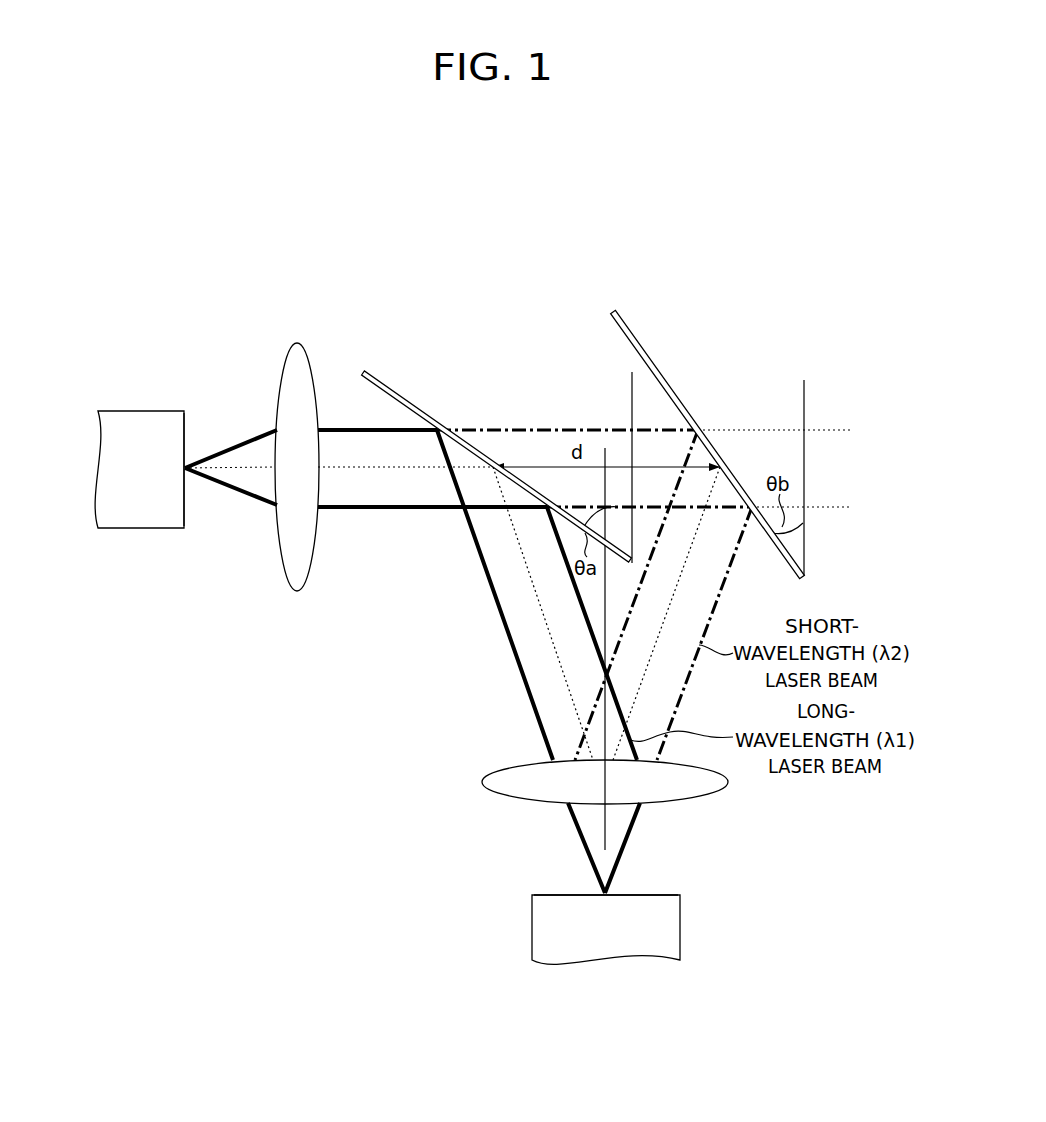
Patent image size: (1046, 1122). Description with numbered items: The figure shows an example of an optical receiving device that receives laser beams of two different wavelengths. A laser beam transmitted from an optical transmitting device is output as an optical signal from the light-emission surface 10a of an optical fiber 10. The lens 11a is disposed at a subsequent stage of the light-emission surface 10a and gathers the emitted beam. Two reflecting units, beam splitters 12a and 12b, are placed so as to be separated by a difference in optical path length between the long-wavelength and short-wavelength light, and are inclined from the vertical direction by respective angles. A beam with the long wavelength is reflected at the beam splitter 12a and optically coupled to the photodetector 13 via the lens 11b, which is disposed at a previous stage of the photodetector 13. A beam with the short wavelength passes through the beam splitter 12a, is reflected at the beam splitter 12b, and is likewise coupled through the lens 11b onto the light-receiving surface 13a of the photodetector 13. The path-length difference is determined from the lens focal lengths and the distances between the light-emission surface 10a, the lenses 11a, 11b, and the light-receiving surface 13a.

The optical fiber 10 is at (138, 425).
The light-emission surface 10a is at (187, 428).
The lens 11a is at (297, 592).
The lens 11b is at (483, 782).
The beam splitter 12a is at (401, 397).
The beam splitter 12b is at (644, 350).
The photodetector 13 is at (548, 930).
The light-receiving surface 13a is at (655, 895).